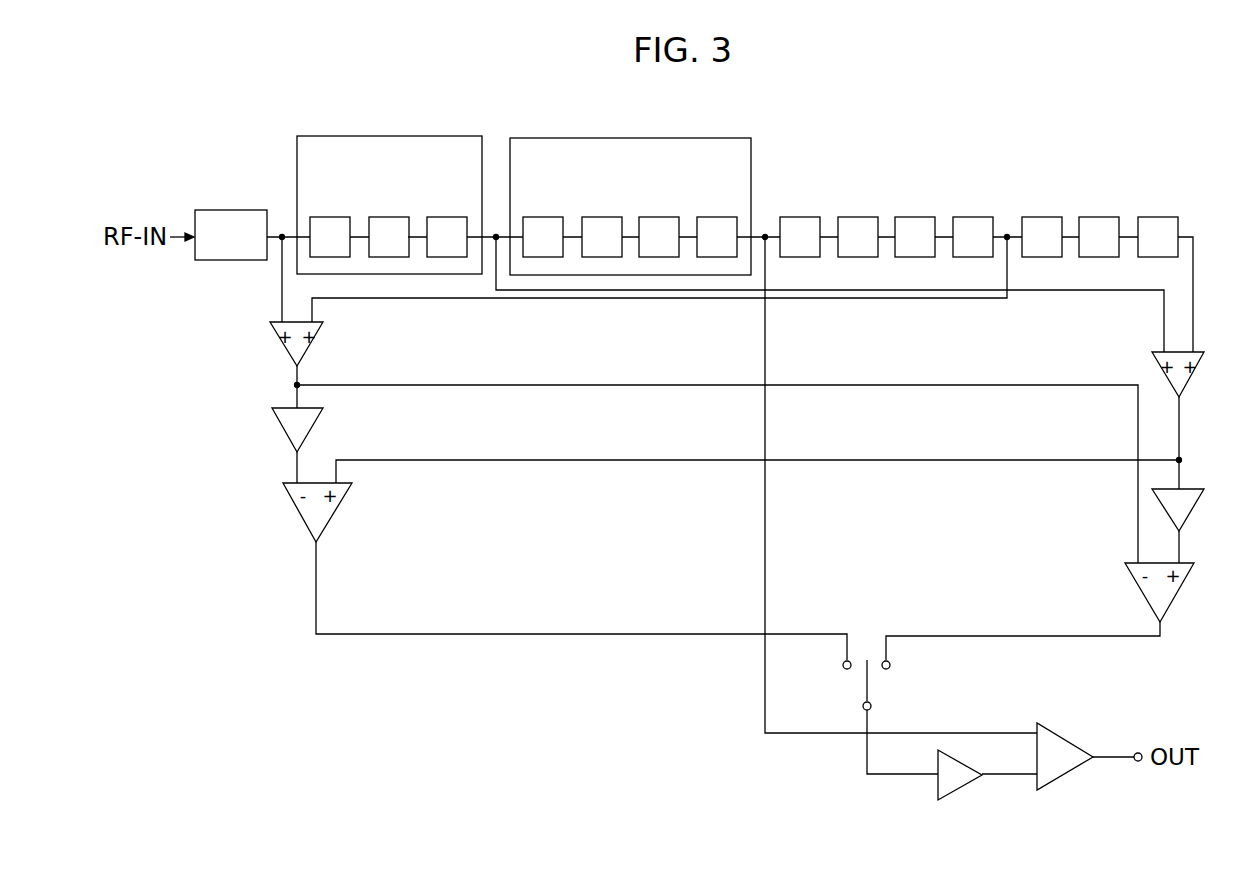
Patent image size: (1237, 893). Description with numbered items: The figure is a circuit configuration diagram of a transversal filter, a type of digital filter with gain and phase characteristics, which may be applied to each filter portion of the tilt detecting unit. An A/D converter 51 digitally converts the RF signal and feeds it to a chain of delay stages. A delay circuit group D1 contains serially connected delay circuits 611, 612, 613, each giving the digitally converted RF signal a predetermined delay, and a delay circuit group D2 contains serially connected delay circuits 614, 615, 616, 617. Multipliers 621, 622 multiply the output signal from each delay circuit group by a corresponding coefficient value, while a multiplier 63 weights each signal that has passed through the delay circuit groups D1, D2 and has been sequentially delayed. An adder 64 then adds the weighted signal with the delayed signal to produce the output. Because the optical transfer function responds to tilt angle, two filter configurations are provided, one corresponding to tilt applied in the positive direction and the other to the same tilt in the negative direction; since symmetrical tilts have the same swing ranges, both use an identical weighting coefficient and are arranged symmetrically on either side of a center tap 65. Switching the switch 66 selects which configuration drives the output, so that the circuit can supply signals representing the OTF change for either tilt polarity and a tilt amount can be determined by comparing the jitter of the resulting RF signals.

The A/D converter 51 is at (230, 260).
The delay circuit 611 is at (330, 217).
The delay circuit 612 is at (388, 217).
The delay circuit 613 is at (445, 217).
The delay circuit 614 is at (543, 217).
The delay circuit 615 is at (602, 217).
The delay circuit 616 is at (660, 217).
The delay circuit 617 is at (717, 217).
The multiplier 621 is at (272, 415).
The multiplier 622 is at (1165, 516).
The multiplier 63 is at (960, 794).
The adder 64 is at (1051, 727).
The center tap 65 is at (765, 228).
The switch 66 is at (897, 688).
The delay circuit group D1 is at (297, 143).
The delay circuit group D2 is at (727, 138).